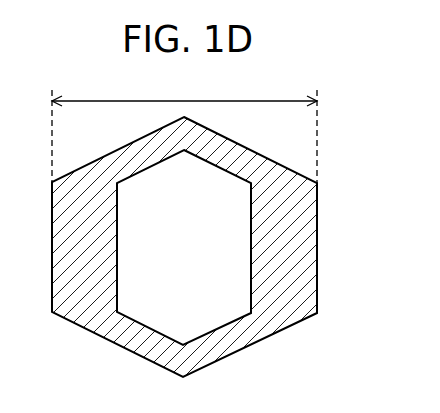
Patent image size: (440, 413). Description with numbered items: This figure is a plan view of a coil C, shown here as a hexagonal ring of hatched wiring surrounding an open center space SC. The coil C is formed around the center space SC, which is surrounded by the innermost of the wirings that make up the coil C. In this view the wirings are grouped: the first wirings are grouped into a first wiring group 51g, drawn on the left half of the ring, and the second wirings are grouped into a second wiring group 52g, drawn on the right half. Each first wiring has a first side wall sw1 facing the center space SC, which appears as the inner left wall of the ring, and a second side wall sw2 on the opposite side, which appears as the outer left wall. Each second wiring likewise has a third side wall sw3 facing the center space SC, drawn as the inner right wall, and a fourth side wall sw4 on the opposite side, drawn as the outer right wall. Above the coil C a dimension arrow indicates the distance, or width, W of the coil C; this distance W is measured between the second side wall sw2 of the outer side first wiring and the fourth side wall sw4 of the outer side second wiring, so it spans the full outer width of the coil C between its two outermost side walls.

The distance (width) W is at (184, 124).
The coil C is at (263, 341).
The center space SC is at (227, 275).
The first wiring group 51g is at (98, 230).
The second wiring group 52g is at (295, 204).
The first side wall sw1 is at (117, 257).
The second side wall sw2 is at (52, 221).
The third side wall sw3 is at (251, 219).
The fourth side wall sw4 is at (318, 184).